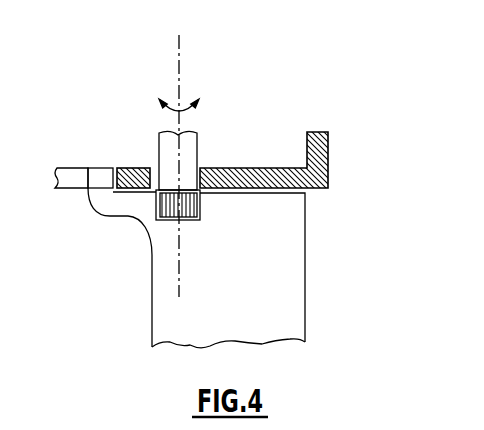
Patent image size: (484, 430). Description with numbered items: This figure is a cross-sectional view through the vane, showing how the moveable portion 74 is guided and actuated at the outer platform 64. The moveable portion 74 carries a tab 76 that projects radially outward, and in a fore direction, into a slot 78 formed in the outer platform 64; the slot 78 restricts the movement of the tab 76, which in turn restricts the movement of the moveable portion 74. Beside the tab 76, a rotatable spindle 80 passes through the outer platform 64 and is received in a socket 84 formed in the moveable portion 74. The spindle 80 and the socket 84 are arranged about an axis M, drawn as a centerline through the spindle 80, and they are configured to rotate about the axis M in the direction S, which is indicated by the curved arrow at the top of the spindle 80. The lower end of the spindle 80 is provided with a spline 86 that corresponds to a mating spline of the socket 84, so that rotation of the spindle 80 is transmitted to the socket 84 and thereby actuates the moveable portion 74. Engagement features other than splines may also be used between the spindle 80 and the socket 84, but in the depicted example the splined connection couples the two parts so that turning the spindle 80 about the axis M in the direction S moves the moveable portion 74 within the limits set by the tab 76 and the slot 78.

The axis M is at (180, 57).
The direction S is at (188, 108).
The slot 78 is at (70, 177).
The tab 76 is at (103, 177).
The rotatable spindle 80 is at (188, 153).
The outer platform 64 is at (328, 152).
The spline 86 is at (190, 210).
The socket 84 is at (200, 205).
The moveable portion 74 is at (285, 277).